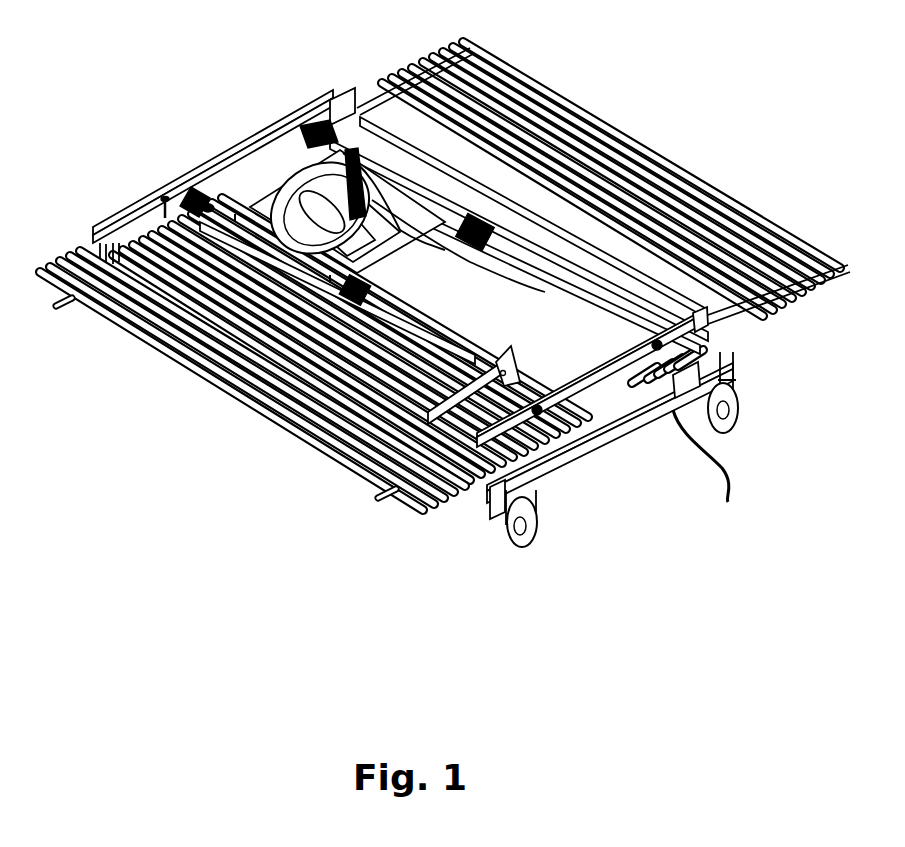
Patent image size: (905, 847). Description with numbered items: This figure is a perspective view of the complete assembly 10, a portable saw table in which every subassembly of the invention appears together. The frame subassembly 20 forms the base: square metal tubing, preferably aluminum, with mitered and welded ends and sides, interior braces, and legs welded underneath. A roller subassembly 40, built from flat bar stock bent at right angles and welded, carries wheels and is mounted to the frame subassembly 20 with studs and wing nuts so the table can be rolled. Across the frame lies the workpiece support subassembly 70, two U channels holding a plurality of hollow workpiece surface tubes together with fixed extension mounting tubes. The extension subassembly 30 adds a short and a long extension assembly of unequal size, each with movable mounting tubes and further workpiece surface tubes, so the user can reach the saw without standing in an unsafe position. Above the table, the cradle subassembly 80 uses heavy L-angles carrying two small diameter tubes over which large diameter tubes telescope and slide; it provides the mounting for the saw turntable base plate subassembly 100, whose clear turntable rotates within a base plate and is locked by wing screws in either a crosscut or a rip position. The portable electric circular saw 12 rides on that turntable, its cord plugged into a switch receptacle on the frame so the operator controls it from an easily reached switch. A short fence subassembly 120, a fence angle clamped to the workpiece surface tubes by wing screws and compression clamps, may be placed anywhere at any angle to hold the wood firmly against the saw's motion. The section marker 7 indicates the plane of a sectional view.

The complete assembly 10 is at (115, 640).
The portable electric circular saw 12 is at (300, 205).
The frame subassembly 20 is at (482, 512).
The extension subassembly 30 is at (355, 505).
The roller subassembly 40 is at (738, 452).
The workpiece support subassembly 70 is at (650, 388).
The cradle subassembly 80 is at (240, 125).
The saw turntable base plate subassembly 100 is at (440, 148).
The short fence subassembly 120 is at (400, 432).
The section line 7- 7 is at (517, 620).